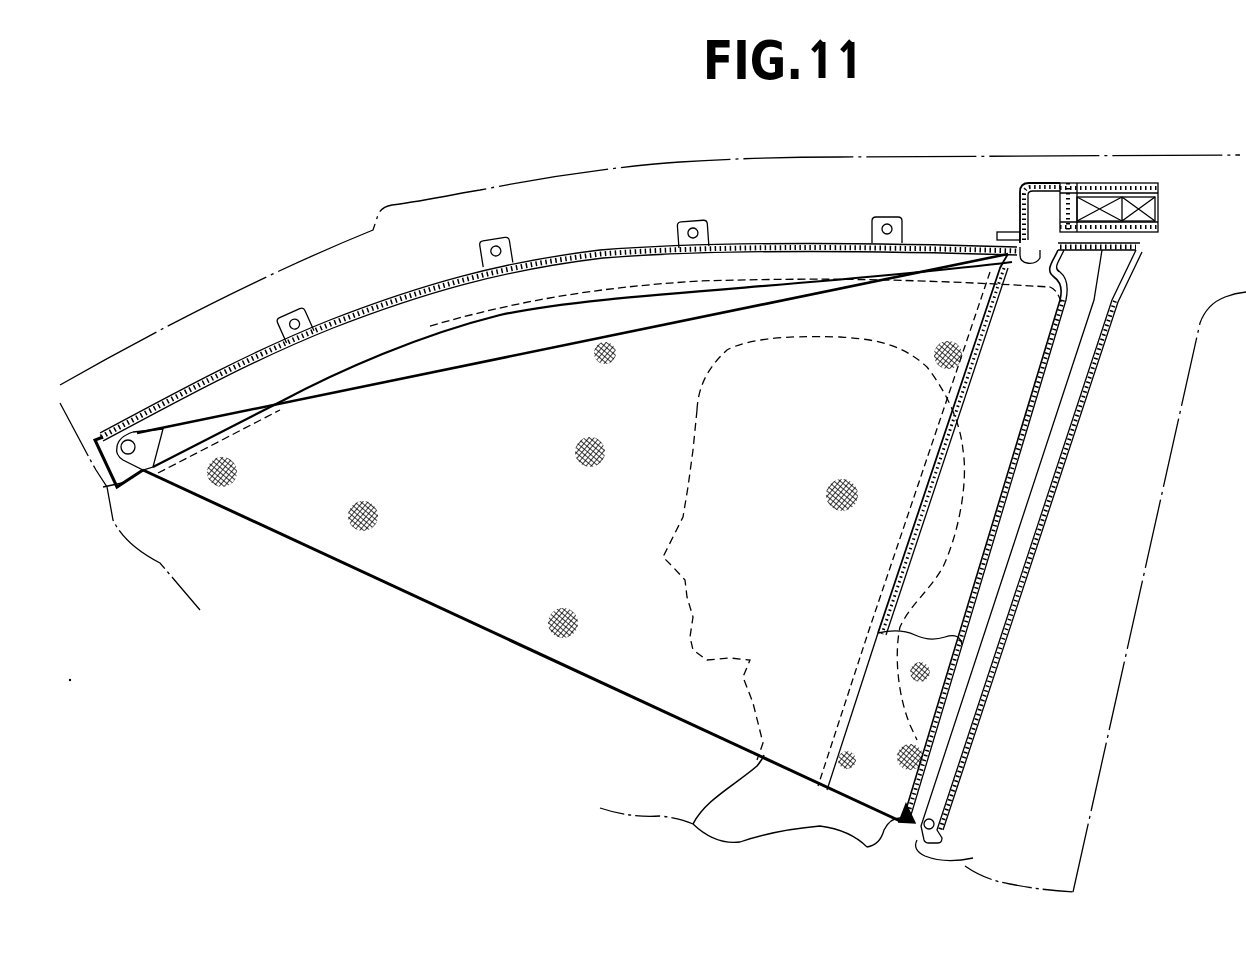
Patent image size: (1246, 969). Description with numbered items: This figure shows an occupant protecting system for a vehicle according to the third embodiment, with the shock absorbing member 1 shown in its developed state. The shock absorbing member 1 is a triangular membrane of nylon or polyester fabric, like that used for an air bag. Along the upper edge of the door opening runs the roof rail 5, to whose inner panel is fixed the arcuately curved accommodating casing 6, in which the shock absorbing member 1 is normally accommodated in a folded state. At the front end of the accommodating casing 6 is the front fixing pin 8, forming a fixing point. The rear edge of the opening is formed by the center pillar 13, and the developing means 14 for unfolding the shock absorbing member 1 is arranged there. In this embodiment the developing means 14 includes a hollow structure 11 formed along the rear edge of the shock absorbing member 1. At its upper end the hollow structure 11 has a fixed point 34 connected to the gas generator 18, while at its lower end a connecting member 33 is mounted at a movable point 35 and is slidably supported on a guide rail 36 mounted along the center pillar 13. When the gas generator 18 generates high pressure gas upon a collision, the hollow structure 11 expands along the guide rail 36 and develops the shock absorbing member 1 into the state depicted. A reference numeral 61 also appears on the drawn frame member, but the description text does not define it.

The shock absorbing member 1 is at (511, 641).
The hollow structure 11 is at (877, 660).
The roof rail 5 is at (413, 205).
The accommodating casing 6 is at (565, 251).
The frame member 61 is at (523, 312).
The front fixing pin 8 is at (125, 440).
The center pillar 13 is at (1145, 500).
The developing means 14 is at (1078, 435).
The gas generator 18 is at (1168, 210).
The connecting member 33 is at (994, 855).
The fixed point 34 is at (1037, 237).
The movable point 35 is at (867, 847).
The guide rail 36 is at (1035, 519).